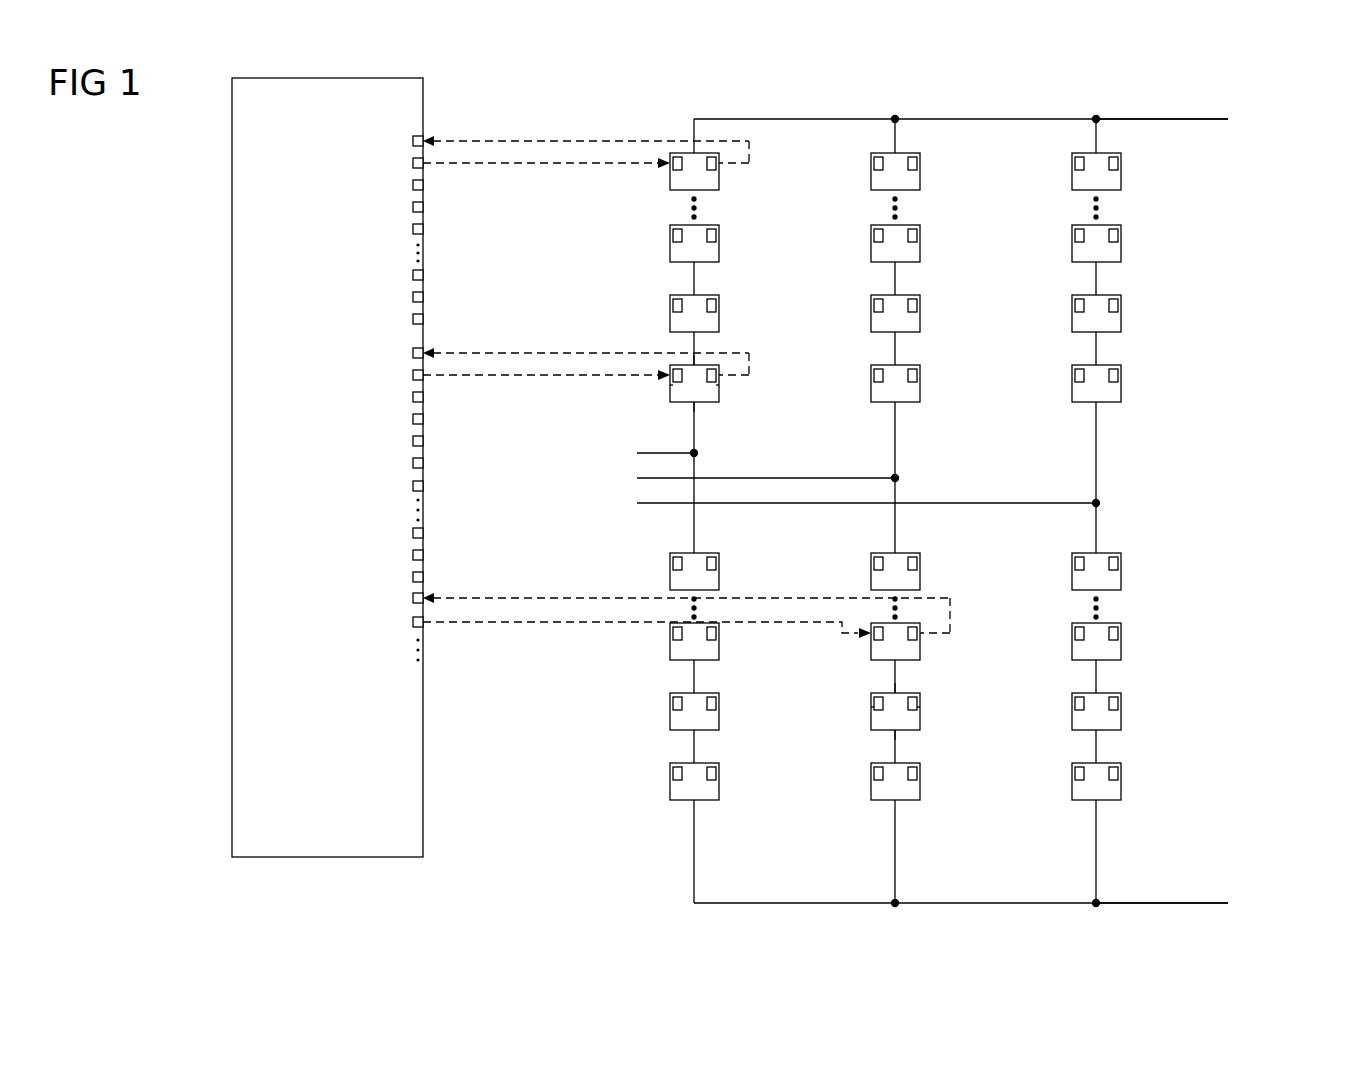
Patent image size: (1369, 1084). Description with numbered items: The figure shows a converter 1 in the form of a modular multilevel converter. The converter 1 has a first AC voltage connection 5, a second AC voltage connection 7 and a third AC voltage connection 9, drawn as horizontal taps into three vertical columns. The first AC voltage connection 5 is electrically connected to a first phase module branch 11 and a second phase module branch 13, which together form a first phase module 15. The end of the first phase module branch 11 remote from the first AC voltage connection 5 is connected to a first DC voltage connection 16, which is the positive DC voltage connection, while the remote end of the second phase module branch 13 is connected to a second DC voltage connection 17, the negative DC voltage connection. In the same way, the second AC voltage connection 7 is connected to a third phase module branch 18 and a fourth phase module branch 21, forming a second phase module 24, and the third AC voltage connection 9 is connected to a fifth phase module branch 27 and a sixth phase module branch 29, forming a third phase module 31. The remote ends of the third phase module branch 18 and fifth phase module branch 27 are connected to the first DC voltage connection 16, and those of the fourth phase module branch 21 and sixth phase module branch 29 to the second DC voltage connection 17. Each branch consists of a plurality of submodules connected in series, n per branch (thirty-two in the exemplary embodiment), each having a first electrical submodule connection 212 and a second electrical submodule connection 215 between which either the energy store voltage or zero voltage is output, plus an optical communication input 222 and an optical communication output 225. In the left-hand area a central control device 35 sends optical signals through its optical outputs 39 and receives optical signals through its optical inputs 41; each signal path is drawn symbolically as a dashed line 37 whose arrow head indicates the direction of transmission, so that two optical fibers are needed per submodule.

The converter 1 is at (1306, 90).
The first AC voltage connection 5 is at (637, 453).
The second AC voltage connection 7 is at (637, 478).
The third AC voltage connection 9 is at (637, 503).
The first phase module branch 11 is at (702, 286).
The second phase module branch 13 is at (707, 678).
The first phase module 15 is at (702, 541).
The first DC voltage connection 16 is at (1205, 120).
The second DC voltage connection 17 is at (1207, 903).
The third phase module branch 18 is at (909, 297).
The fourth phase module branch 21 is at (909, 692).
The second phase module 24 is at (909, 540).
The fifth phase module branch 27 is at (1109, 310).
The sixth phase module branch 29 is at (1109, 705).
The third phase module 31 is at (1109, 540).
The control device 35 is at (289, 467).
The dashed line 37 is at (500, 132).
The optical outputs 39 is at (413, 165).
The optical inputs 41 is at (413, 141).
The first electrical submodule connection 212 is at (694, 362).
The second electrical submodule connection 215 is at (705, 402).
The optical communication input 222 is at (670, 387).
The optical communication output 225 is at (719, 381).